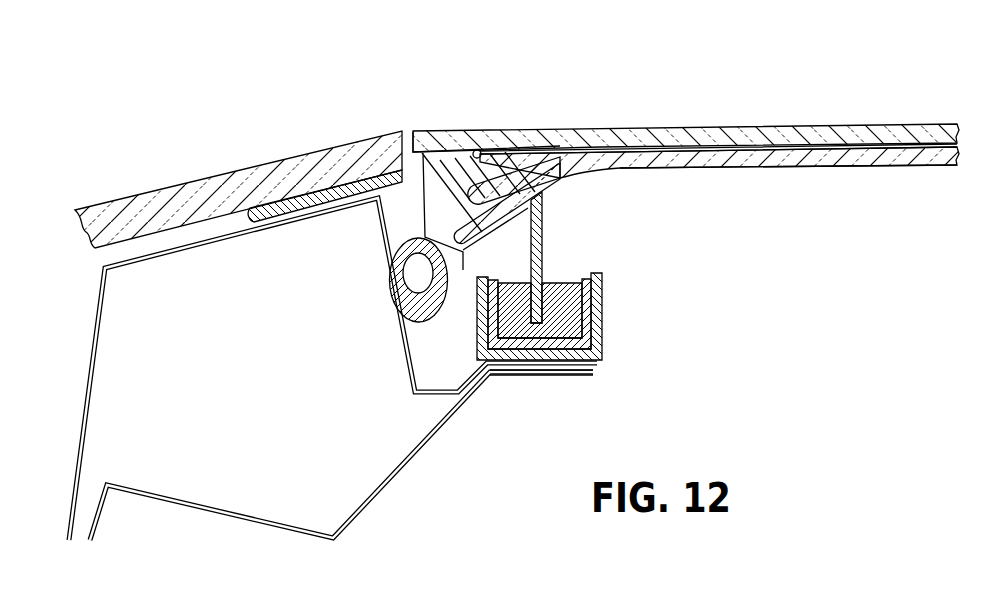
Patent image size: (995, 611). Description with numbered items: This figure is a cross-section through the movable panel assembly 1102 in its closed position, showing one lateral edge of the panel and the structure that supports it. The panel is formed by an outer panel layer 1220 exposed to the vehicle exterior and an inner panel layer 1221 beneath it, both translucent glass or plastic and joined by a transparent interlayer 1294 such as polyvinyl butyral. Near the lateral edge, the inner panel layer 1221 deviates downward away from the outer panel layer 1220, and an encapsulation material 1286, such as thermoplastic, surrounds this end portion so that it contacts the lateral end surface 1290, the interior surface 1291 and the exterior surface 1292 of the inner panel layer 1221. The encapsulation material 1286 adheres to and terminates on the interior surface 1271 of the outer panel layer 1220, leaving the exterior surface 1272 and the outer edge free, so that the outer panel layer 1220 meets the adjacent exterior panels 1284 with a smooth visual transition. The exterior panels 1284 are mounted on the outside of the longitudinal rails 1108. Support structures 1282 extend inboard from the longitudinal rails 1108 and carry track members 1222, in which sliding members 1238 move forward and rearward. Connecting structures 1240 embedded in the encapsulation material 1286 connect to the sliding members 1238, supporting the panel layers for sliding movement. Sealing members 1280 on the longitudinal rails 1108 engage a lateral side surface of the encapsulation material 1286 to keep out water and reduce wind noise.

The movable panel assembly 1102 is at (686, 132).
The longitudinal rails 1108 is at (90, 384).
The outer panel layer 1220 is at (660, 126).
The inner panel layer 1221 is at (797, 156).
The track members 1222 is at (604, 296).
The sliding members 1238 is at (560, 284).
The connecting structures 1240 is at (548, 232).
The interior surface of the outer panel layer 1271 is at (497, 165).
The exterior surface of the outer panel layer 1272 is at (510, 132).
The sealing members 1280 is at (410, 325).
The support structures 1282 is at (538, 376).
The exterior panels 1284 is at (150, 188).
The encapsulation material 1286 is at (390, 172).
The lateral end surface of the inner panel layer 1290 is at (457, 192).
The interior surface of the inner panel layer 1291 is at (723, 168).
The exterior surface of the inner panel layer 1292 is at (535, 163).
The interlayer 1294 is at (890, 144).